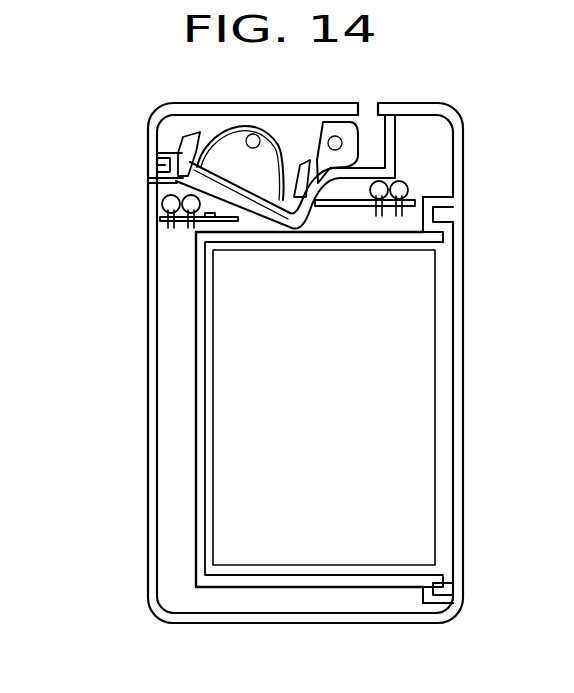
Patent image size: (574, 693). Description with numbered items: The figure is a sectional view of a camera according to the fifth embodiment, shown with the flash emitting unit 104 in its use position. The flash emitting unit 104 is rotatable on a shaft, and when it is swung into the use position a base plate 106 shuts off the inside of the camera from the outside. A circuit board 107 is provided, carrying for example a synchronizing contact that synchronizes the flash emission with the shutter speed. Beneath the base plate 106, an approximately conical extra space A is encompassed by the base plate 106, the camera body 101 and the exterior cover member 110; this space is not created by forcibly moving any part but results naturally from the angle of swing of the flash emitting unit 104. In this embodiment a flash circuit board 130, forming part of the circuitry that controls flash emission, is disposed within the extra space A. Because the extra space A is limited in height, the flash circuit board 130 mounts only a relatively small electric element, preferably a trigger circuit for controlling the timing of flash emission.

The camera body 101 is at (197, 395).
The flash emitting unit 104 is at (287, 135).
The base plate 106 is at (306, 222).
The circuit board 107 is at (413, 198).
The exterior cover member 110 is at (152, 462).
The flash circuit board 130 is at (172, 228).
The extra space A is at (248, 228).